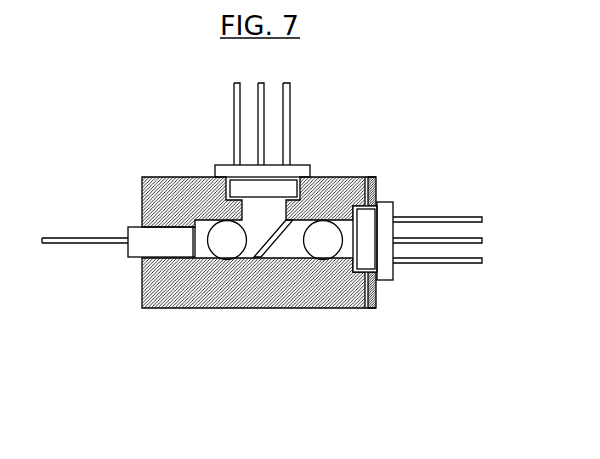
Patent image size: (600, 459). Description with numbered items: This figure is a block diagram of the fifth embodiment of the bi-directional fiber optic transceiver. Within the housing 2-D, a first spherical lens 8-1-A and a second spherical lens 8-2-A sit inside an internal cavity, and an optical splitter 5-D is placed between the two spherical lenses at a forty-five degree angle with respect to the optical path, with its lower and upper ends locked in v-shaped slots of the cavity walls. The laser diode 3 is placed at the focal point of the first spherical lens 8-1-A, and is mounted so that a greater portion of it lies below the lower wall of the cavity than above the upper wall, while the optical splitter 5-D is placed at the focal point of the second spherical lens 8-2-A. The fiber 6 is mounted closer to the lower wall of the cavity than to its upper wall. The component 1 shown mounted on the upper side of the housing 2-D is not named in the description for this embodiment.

The laser diode package 1 is at (278, 172).
The housing 2-D is at (152, 210).
The laser diode 3 is at (383, 268).
The optical splitter 5-D is at (265, 260).
The fiber 6 is at (132, 253).
The first spherical lens 8-1-A is at (323, 260).
The second spherical lens 8-2-A is at (232, 233).